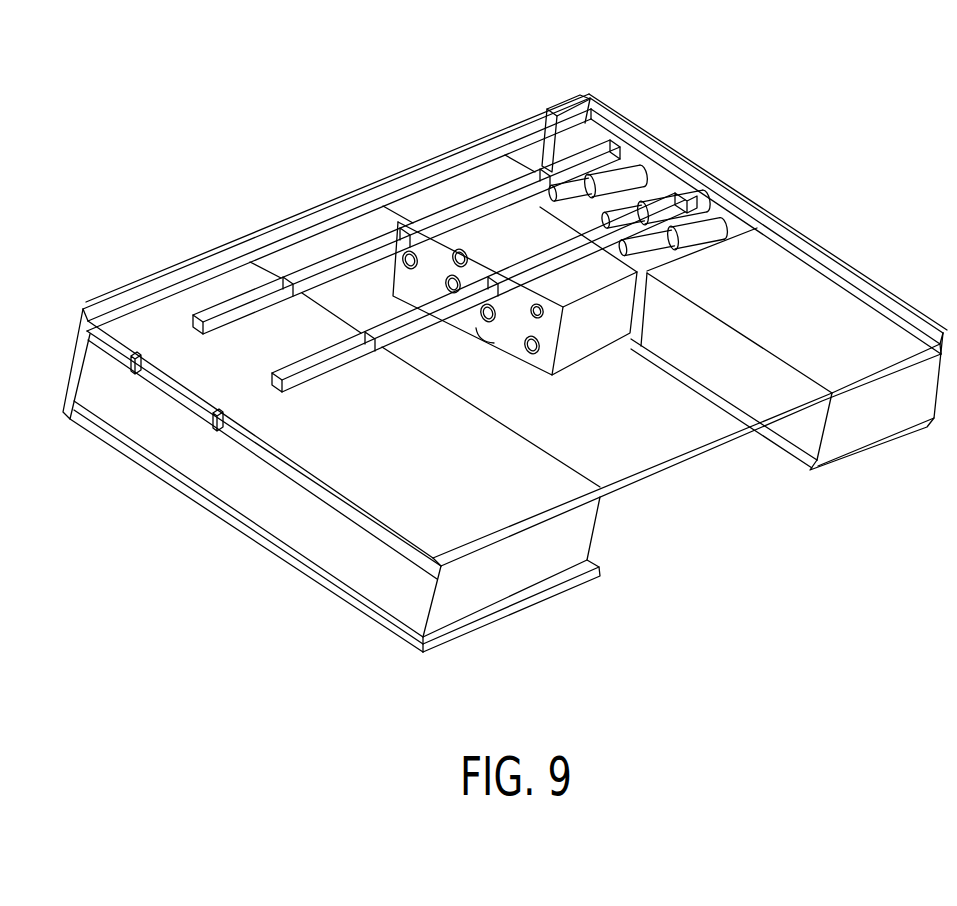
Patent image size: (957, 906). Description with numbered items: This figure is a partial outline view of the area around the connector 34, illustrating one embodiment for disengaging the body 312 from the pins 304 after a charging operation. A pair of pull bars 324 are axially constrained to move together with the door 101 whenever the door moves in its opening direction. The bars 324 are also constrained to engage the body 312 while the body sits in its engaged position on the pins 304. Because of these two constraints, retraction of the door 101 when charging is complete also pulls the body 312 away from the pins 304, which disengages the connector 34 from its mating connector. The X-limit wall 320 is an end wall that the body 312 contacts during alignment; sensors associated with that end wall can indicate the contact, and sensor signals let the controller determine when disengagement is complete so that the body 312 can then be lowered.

The door 101 is at (523, 495).
The connector 34 is at (546, 232).
The pin 304 is at (641, 176).
The body 312 is at (590, 264).
The X-limit wall 320 is at (773, 357).
The pull bars 324 is at (419, 303).